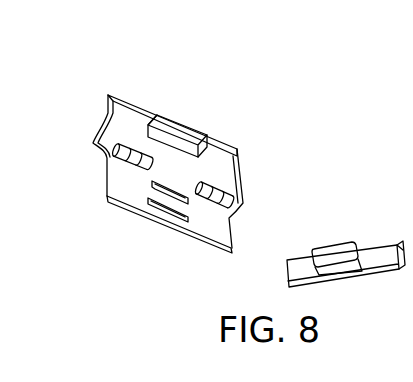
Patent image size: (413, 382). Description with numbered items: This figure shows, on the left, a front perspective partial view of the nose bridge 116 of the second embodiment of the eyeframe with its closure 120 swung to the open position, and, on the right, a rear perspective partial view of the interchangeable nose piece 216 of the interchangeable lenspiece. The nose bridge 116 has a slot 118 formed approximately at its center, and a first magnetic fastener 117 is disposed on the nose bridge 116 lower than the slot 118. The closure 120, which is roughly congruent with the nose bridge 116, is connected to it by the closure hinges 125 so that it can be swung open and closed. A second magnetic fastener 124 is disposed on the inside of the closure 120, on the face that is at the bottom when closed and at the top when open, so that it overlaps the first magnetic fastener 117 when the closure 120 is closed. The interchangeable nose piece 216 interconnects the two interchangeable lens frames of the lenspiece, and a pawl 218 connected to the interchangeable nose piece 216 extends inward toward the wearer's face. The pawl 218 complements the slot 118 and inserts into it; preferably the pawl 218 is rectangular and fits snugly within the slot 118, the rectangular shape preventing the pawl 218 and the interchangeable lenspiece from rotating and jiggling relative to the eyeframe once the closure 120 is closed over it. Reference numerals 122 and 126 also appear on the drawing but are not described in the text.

The closure 120 is at (179, 162).
The base plate 122 is at (106, 116).
The second magnetic fastener 124 is at (183, 122).
The closure hinge 125 is at (120, 163).
The upper edge 126 is at (135, 97).
The nose bridge 116 is at (217, 232).
The first magnetic fastener 117 is at (182, 218).
The slot 118 is at (148, 200).
The interchangeable nose piece 216 is at (387, 275).
The pawl 218 is at (335, 248).